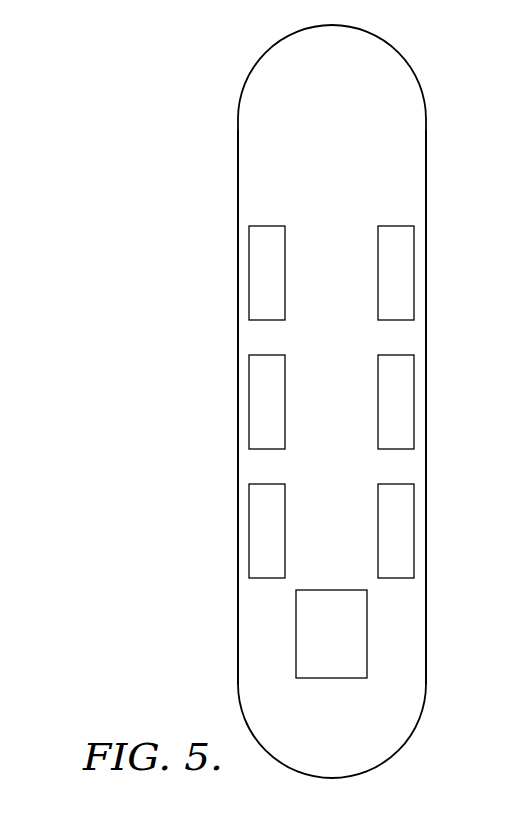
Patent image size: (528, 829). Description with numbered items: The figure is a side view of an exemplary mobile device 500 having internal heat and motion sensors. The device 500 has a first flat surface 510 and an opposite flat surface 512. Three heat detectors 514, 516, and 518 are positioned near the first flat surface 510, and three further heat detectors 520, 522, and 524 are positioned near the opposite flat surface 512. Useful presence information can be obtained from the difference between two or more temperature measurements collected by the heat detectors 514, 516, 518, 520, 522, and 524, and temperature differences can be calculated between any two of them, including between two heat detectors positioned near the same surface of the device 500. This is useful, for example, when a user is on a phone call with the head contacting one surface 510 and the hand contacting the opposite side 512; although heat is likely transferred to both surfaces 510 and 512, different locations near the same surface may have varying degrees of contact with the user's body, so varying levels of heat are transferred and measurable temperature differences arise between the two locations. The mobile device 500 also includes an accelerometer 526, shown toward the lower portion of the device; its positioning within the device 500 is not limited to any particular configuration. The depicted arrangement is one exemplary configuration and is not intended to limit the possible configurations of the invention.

The mobile device 500 is at (122, 119).
The first flat surface 510 is at (238, 200).
The opposite flat surface 512 is at (426, 202).
The heat detector 514 is at (285, 271).
The heat detector 516 is at (285, 400).
The heat detector 518 is at (285, 528).
The heat detector 520 is at (414, 271).
The heat detector 522 is at (414, 400).
The heat detector 524 is at (414, 528).
The accelerometer 526 is at (332, 678).